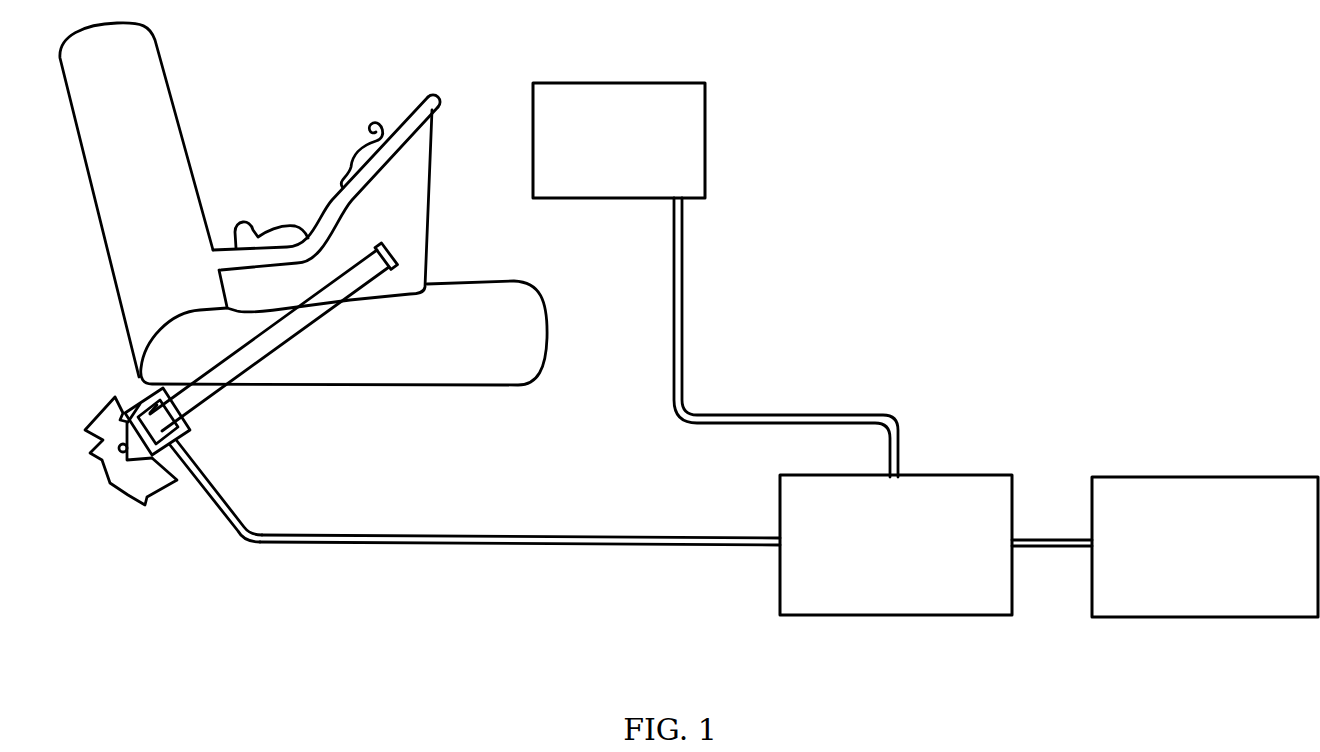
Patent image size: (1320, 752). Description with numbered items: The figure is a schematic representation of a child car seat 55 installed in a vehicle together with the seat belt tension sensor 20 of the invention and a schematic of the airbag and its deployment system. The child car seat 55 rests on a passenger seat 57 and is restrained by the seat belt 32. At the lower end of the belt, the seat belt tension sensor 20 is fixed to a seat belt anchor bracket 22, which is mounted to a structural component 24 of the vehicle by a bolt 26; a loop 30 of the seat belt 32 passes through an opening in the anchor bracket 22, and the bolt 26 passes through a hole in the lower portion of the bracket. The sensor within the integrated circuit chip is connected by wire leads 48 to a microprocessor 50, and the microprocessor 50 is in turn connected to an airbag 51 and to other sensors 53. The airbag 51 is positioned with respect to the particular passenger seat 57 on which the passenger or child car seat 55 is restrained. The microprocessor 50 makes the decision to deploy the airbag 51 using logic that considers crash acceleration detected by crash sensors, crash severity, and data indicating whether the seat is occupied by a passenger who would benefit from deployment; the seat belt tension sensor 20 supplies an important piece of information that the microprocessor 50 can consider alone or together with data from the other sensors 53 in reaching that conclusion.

The seat belt tension sensor 20 is at (193, 427).
The seat belt anchor bracket 22 is at (167, 460).
The structural component 24 is at (125, 502).
The bolt 26 is at (117, 448).
The loop 30 is at (146, 409).
The seat belt 32 is at (317, 327).
The wire leads 48 is at (455, 543).
The microprocessor 50 is at (905, 615).
The airbag 51 is at (648, 83).
The other sensors 53 is at (1247, 477).
The child car seat 55 is at (430, 205).
The passenger seat 57 is at (547, 340).